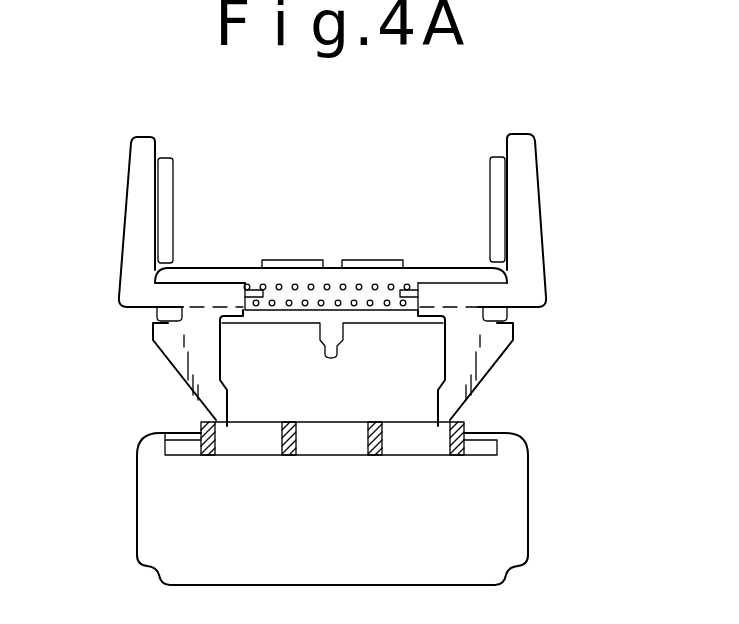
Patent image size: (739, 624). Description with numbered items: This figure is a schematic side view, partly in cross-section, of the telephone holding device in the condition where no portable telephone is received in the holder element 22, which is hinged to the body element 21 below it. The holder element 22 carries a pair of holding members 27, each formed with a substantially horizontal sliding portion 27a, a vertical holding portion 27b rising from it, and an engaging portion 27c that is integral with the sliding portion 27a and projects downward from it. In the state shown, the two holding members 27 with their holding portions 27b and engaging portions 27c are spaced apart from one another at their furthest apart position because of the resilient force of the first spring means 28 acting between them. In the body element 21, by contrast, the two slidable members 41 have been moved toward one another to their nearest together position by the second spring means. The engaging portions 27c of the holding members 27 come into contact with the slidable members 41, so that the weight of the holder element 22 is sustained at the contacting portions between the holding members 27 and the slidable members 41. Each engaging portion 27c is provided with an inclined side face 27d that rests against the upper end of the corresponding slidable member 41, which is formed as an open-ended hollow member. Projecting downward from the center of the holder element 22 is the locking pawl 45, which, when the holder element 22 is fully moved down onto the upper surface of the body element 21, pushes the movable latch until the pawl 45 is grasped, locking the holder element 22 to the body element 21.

The body element 21 is at (528, 507).
The holder element 22 is at (432, 264).
The holding member 27 is at (125, 219).
The horizontal sliding portion 27a is at (480, 291).
The vertical holding portion 27b is at (532, 249).
The engaging portion 27c is at (170, 337).
The inclined side face 27d is at (162, 362).
The first spring means 28 is at (310, 284).
The slidable member 41 is at (180, 441).
The locking pawl 45 is at (339, 358).